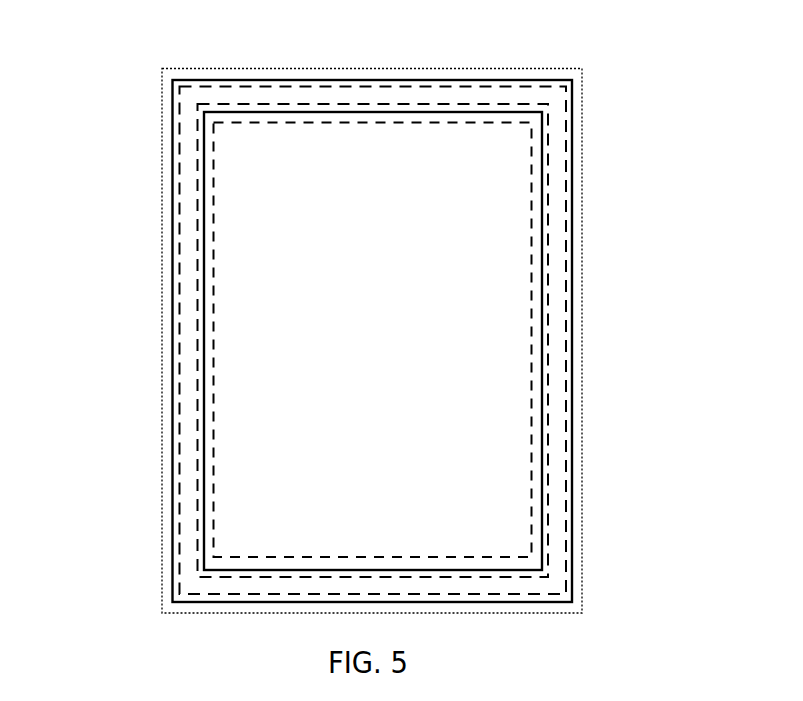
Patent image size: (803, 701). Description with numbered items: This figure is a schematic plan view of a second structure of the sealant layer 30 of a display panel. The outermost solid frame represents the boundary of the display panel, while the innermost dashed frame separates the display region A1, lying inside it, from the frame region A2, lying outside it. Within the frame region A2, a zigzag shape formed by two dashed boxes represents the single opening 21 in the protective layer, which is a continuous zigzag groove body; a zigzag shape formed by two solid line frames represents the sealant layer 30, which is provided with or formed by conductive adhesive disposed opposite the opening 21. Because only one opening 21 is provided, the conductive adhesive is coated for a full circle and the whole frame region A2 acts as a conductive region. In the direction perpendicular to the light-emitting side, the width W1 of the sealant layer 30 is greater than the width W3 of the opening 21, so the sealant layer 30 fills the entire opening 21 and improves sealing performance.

The sealant layer 30 is at (164, 187).
The opening 21 is at (572, 432).
The display region A1 is at (373, 161).
The frame region A2 is at (556, 128).
The width of the sealant layer W1 is at (485, 251).
The width of the opening W3 is at (123, 323).